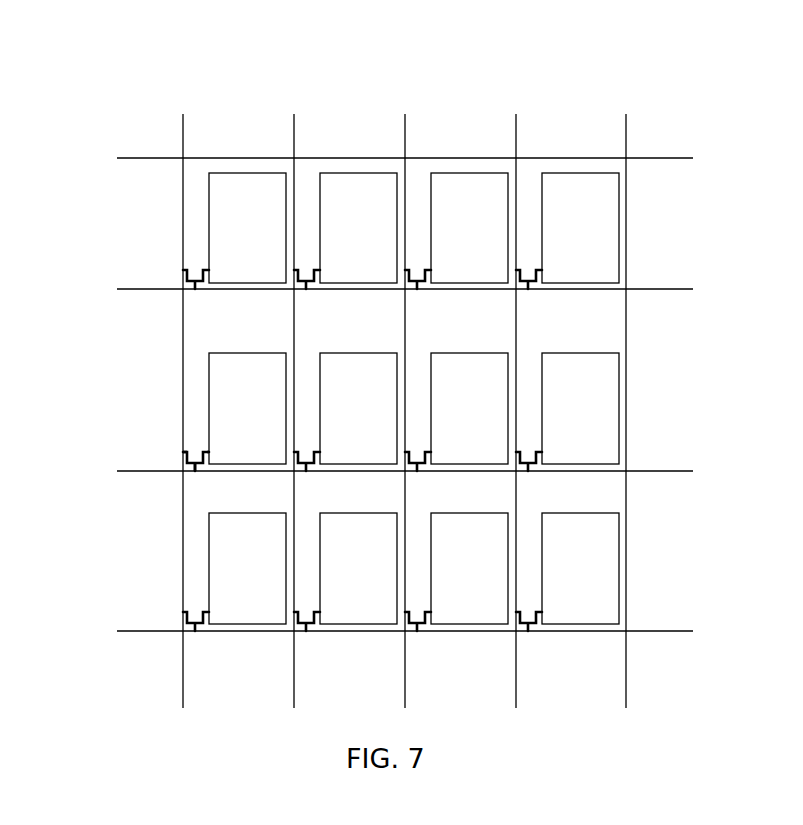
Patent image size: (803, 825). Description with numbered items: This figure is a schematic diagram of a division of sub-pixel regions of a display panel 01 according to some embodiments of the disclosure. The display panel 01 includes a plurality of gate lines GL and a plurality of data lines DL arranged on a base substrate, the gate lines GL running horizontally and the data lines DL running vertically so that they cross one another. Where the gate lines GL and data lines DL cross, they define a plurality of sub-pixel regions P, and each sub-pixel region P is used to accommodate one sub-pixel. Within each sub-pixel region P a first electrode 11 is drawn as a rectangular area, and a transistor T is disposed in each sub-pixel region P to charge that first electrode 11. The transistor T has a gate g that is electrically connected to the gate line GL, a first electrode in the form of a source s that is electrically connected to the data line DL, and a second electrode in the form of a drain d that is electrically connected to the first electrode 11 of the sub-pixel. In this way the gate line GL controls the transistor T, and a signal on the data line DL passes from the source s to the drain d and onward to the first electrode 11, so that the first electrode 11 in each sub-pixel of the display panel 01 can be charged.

The display panel 01 is at (150, 47).
The first electrode 11 is at (595, 405).
The sub-pixel region P is at (197, 207).
The transistor T is at (165, 256).
The gate line GL is at (387, 393).
The data line DL is at (400, 398).
The source s is at (179, 450).
The drain d is at (214, 450).
The gate g is at (195, 477).